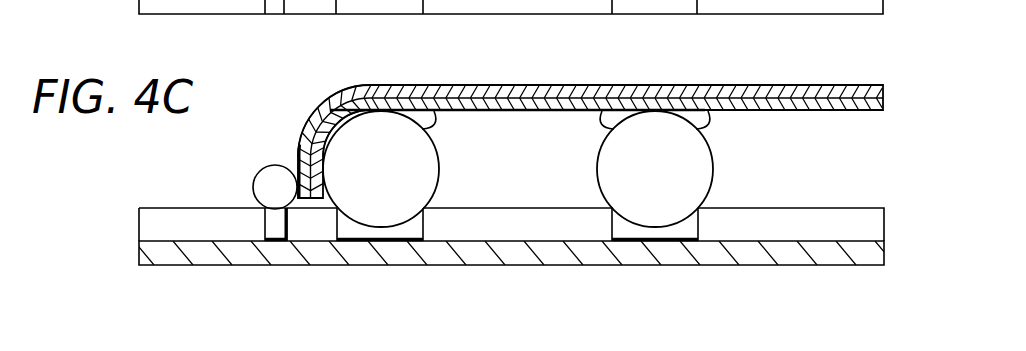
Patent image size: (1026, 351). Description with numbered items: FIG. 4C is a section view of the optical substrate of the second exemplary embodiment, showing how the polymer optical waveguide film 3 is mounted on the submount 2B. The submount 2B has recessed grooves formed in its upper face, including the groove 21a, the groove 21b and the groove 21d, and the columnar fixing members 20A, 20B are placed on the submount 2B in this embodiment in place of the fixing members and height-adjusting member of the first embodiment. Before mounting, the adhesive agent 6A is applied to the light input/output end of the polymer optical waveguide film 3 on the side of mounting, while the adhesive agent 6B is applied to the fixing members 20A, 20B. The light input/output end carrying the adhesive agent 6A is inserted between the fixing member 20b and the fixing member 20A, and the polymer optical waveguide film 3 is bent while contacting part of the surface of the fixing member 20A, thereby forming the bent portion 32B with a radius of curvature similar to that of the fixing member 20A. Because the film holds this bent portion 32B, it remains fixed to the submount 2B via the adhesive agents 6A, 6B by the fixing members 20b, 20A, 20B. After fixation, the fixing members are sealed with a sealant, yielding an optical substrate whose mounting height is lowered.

The polymer optical waveguide film 3 is at (696, 75).
The bent portion 32B is at (303, 102).
The columnar fixing member 20A is at (380, 120).
The columnar fixing member 20B is at (638, 122).
The fixing member 20b is at (257, 193).
The adhesive agent 6A is at (297, 185).
The adhesive agent 6B is at (432, 121).
The groove 21d is at (187, 225).
The groove 21a is at (285, 212).
The groove 21b is at (418, 240).
The submount 2B is at (755, 249).